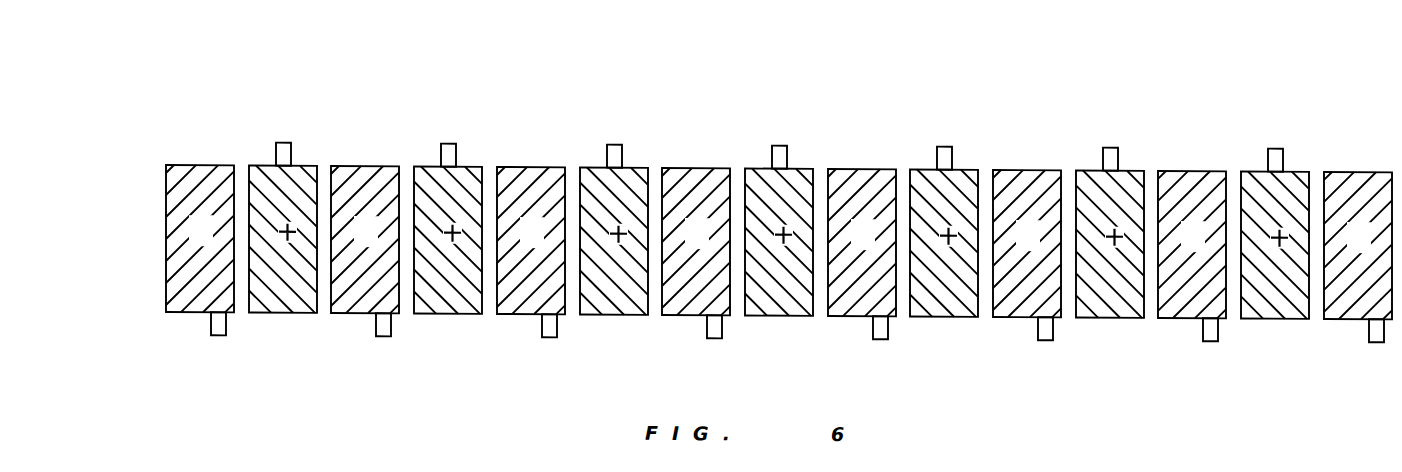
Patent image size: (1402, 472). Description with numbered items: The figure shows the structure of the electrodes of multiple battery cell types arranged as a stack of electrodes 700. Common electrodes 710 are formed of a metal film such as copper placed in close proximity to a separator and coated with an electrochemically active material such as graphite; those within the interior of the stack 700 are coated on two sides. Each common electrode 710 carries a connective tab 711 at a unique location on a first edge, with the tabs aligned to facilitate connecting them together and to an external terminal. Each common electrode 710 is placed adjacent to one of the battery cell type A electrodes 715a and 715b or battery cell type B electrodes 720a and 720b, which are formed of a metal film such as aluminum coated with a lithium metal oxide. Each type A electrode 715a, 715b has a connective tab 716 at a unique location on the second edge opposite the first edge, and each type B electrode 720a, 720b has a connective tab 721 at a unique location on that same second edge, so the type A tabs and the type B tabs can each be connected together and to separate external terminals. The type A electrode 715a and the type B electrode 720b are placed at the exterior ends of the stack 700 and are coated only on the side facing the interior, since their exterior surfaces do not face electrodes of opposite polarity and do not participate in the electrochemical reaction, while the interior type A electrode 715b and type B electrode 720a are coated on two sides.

The stack of electrodes 700 is at (1367, 79).
The common electrode 710 is at (278, 312).
The connective tab 711 is at (276, 153).
The battery cell type A electrode 715a is at (183, 165).
The battery cell type A electrode 715b is at (514, 165).
The connective tab 716 is at (211, 330).
The battery cell type B electrode 720a is at (1341, 165).
The battery cell type B electrode 720b is at (348, 165).
The connective tab 721 is at (376, 330).